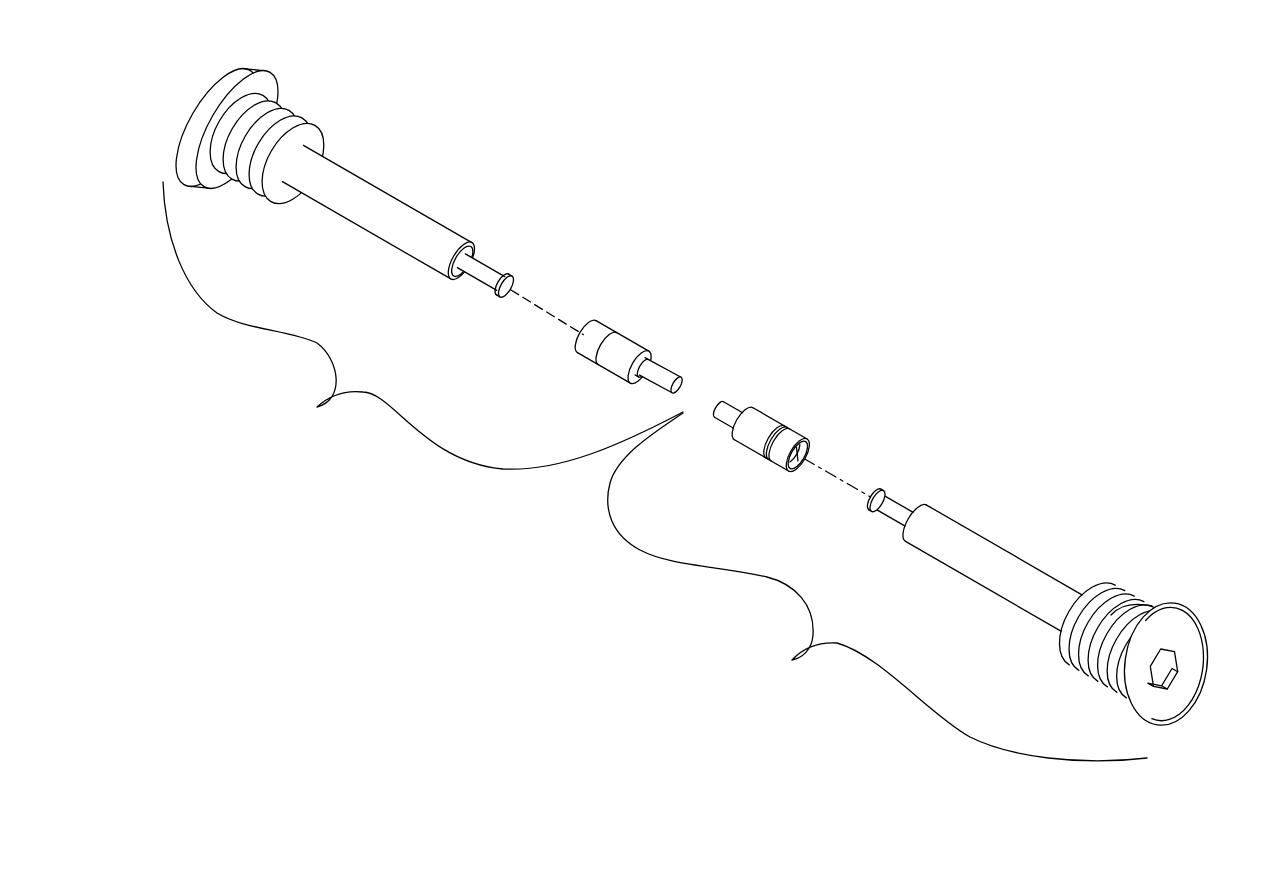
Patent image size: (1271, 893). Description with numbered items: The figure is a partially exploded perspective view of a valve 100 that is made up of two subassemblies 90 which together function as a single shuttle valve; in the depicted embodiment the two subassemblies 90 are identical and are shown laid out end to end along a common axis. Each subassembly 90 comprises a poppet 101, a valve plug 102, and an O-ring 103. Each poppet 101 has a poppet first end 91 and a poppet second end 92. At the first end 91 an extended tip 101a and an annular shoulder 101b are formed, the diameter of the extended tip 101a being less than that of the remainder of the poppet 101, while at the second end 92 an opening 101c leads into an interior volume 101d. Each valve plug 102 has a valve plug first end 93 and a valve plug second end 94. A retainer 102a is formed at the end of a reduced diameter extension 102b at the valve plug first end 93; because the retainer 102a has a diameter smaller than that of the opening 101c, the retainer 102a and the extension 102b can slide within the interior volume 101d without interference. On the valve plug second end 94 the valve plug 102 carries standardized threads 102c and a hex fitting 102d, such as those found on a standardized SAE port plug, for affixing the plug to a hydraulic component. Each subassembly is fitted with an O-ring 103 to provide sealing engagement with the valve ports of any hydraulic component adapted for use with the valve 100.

The subassembly 90 is at (655, 471).
The poppet first end 91 is at (691, 394).
The poppet second end 92 is at (692, 396).
The valve plug first end 93 is at (690, 393).
The valve plug second end 94 is at (702, 385).
The valve 100 is at (702, 410).
The poppet 101 is at (692, 396).
The extended tip 101a is at (691, 394).
The annular shoulder 101b is at (643, 368).
The opening 101c is at (797, 455).
The interior volume 101d is at (797, 454).
The valve plug 102 is at (682, 388).
The retainer 102a is at (690, 393).
The reduced diameter extension 102b is at (685, 390).
The standardized threads 102c is at (1099, 629).
The hex fitting 102d is at (1163, 669).
The O-ring 103 is at (684, 389).